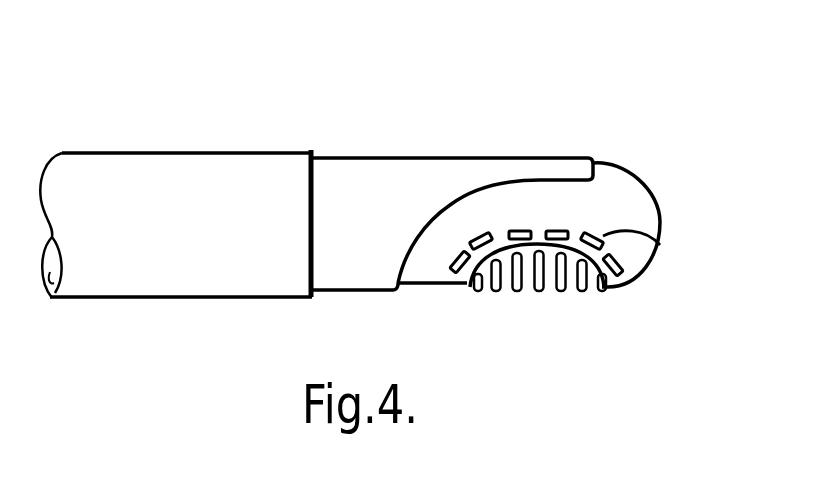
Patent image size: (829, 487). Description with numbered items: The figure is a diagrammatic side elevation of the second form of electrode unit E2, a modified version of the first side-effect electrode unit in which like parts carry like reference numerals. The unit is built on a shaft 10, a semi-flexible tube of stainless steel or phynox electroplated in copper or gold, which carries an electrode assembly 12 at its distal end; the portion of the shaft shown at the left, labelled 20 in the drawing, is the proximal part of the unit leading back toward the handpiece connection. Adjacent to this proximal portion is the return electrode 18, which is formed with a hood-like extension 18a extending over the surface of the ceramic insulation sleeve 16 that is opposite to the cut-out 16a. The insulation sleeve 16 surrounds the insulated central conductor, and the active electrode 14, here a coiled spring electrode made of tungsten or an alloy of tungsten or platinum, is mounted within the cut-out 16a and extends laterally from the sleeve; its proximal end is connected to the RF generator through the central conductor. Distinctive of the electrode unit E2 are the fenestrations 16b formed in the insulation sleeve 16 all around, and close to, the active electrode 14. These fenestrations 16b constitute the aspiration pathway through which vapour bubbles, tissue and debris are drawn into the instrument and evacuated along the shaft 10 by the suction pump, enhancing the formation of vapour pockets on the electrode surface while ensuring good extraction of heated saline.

The shaft 10 is at (48, 298).
The electrode assembly 12 is at (582, 138).
The active electrode 14 is at (587, 290).
The insulation sleeve 16 is at (637, 217).
The cut-out 16a is at (483, 290).
The fenestrations 16b is at (660, 245).
The return electrode 18 is at (372, 183).
The hood-like extension 18a is at (527, 163).
The instrument shaft 20 is at (143, 152).
The electrode unit E2 is at (318, 138).